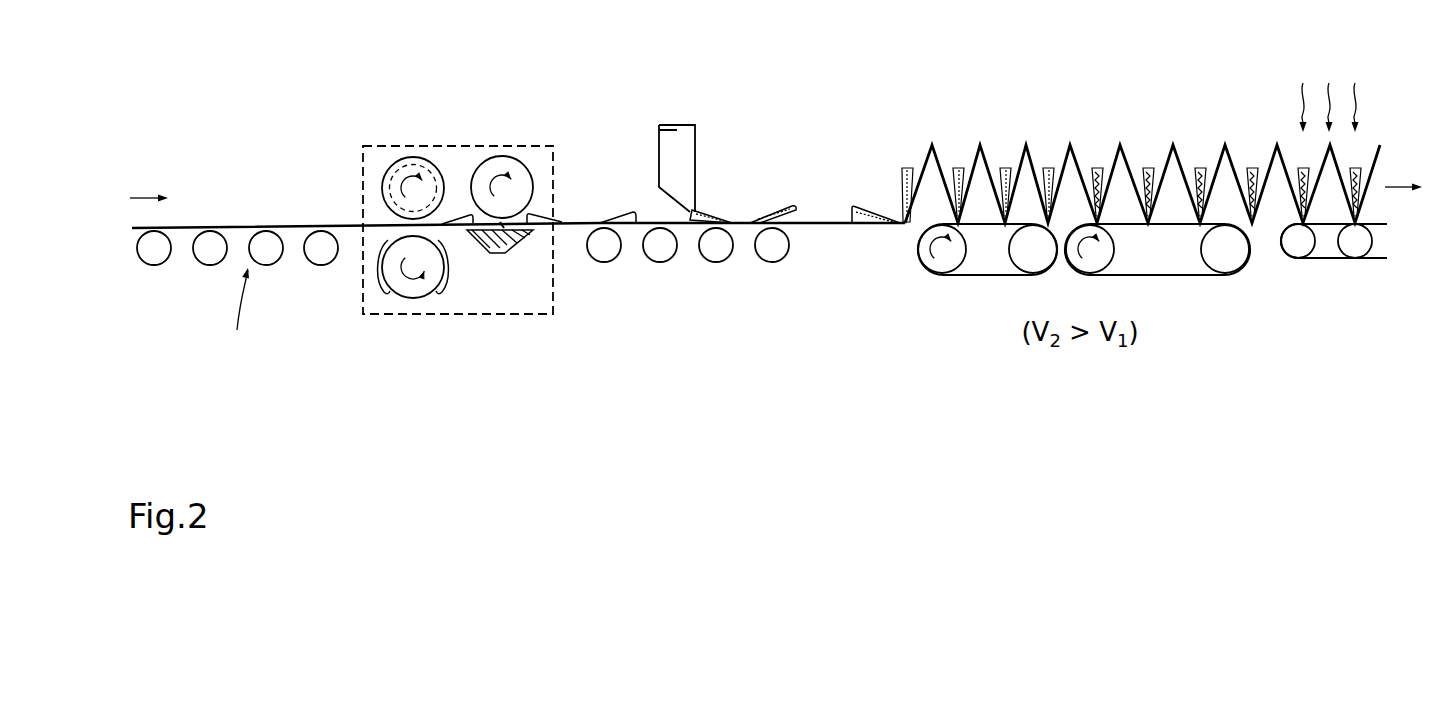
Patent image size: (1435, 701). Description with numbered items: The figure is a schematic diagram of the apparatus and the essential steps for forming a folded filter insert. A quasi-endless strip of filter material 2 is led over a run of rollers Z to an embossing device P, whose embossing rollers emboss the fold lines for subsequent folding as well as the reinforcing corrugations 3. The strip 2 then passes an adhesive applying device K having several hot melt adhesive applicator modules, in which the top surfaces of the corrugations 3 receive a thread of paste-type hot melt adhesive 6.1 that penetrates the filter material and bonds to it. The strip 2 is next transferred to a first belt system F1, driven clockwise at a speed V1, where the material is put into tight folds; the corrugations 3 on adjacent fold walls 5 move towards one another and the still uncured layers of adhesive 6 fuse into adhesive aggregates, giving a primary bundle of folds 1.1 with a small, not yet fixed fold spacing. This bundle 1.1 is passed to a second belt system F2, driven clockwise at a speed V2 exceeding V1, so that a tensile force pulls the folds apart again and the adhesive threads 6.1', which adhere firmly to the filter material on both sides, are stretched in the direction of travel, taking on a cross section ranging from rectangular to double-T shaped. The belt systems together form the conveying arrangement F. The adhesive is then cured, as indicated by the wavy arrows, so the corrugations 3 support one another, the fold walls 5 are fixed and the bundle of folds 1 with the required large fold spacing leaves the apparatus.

The bundle of folds 1 is at (1376, 127).
The primary bundle of folds 1.1 is at (1080, 128).
The strip of filter material 2 is at (235, 228).
The reinforcing corrugations 3 is at (617, 220).
The fold walls 5 is at (920, 160).
The layers of adhesive 6 is at (1200, 170).
The hot melt adhesive thread 6.1 is at (795, 135).
The adhesive threads 6.1' is at (993, 135).
The adhesive applying device K is at (677, 140).
The embossing device P is at (425, 145).
The run of rollers Z is at (228, 358).
The first speed V1 is at (987, 269).
The second speed V2 is at (1157, 269).
The first belt system F1 is at (942, 275).
The conveying device F is at (1044, 372).
The second belt system F2 is at (1223, 275).